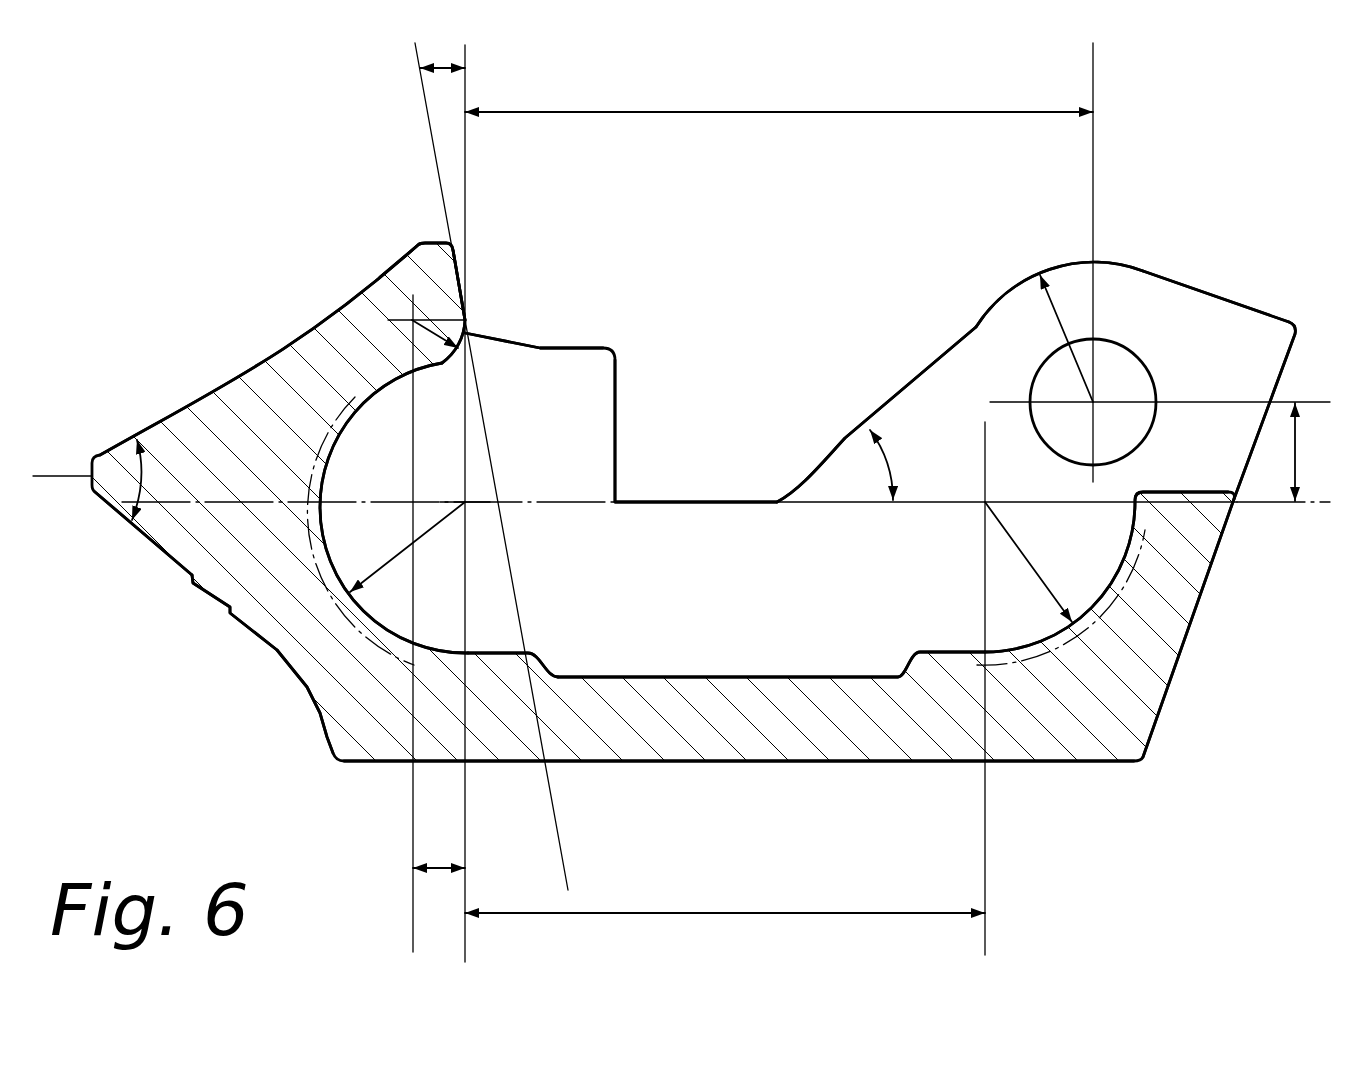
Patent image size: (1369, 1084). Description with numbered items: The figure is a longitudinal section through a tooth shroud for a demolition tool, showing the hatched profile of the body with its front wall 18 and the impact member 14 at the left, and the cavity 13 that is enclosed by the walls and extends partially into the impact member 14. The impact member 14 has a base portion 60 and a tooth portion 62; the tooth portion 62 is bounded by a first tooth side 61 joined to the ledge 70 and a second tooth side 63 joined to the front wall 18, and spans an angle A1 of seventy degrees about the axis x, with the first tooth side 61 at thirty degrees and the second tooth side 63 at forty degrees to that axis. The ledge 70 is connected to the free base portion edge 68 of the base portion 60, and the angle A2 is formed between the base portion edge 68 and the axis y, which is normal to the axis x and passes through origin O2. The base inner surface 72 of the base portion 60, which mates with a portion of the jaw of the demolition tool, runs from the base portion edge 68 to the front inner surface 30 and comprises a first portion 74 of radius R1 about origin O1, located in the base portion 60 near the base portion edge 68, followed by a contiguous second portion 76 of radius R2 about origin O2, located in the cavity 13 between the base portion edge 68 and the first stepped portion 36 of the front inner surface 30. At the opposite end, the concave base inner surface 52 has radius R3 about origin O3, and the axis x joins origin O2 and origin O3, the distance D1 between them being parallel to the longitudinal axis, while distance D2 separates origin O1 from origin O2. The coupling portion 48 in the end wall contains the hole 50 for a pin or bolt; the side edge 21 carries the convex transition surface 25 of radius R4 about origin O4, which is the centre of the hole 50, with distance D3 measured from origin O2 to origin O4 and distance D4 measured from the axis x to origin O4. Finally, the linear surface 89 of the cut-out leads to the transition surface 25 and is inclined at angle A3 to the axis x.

The impact member 14 is at (233, 342).
The first tooth side 61 is at (177, 410).
The tooth portion 62 is at (193, 507).
The second tooth side 63 is at (173, 560).
The base portion 60 is at (313, 637).
The ledge 70 is at (433, 241).
The base portion edge 68 is at (462, 282).
The second portion 76 is at (412, 320).
The first portion 74 is at (465, 364).
The base inner surface 72 is at (367, 422).
The first stepped portion 36 is at (512, 652).
The front inner surface 30 is at (678, 668).
The cavity 13 is at (677, 547).
The linear surface 89 is at (852, 435).
The transition surface 25 is at (1068, 261).
The side edge 21 is at (1143, 266).
The hole 50 is at (1127, 346).
The coupling portion 48 is at (1167, 388).
The base inner surface 52 is at (1100, 582).
The front wall 18 is at (1052, 764).
The axis X x is at (832, 505).
The axis Y y is at (466, 172).
The origin O1 is at (405, 318).
The origin O2 is at (466, 503).
The origin O3 is at (985, 504).
The origin O4 is at (1097, 404).
The radius R1 is at (467, 320).
The radius R2 is at (383, 568).
The radius R3 is at (1030, 566).
The radius R4 is at (1063, 332).
The angle A1 is at (143, 470).
The angle A2 is at (450, 70).
The angle A3 is at (890, 460).
The distance D1 is at (752, 910).
The distance D2 is at (443, 865).
The distance D3 is at (765, 115).
The distance D4 is at (1297, 454).